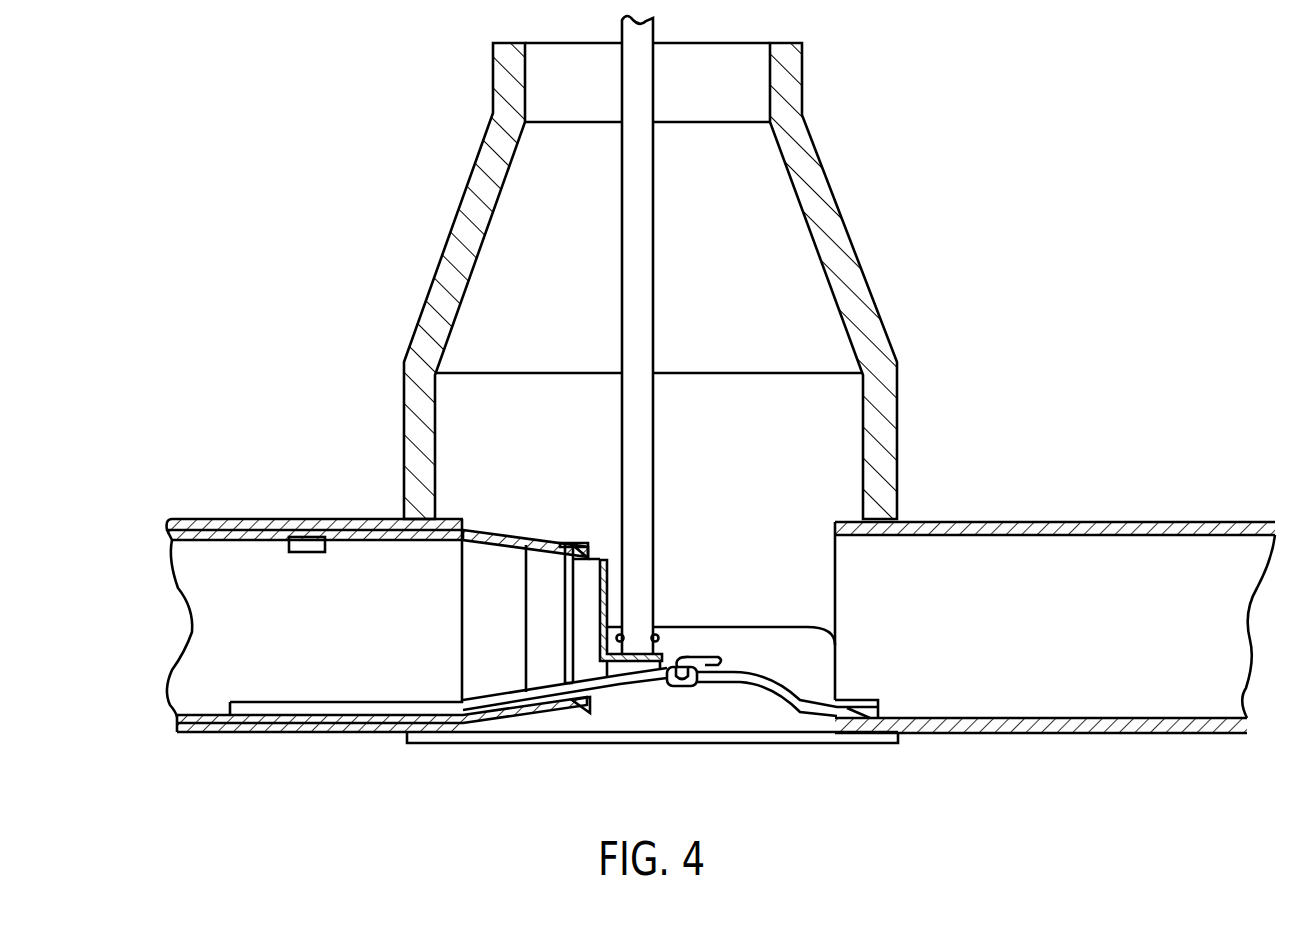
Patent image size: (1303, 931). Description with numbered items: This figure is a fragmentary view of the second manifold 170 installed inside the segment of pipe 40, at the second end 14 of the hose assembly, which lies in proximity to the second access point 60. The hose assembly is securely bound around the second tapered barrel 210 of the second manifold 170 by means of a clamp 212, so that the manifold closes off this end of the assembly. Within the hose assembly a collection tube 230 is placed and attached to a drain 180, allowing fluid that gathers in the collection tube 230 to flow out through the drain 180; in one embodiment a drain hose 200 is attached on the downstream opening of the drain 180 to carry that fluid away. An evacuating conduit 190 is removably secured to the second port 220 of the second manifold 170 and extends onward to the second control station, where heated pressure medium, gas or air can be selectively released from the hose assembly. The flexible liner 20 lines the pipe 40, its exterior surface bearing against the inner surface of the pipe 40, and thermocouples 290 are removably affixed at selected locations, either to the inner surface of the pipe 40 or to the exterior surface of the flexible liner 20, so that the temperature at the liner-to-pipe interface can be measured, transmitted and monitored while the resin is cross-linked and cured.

The second end 14 is at (500, 530).
The flexible liner 20 is at (245, 722).
The segment of pipe 40 is at (180, 722).
The second access point 60 is at (705, 122).
The second manifold 170 is at (483, 643).
The drain 180 is at (697, 683).
The evacuating conduit 190 is at (653, 352).
The drain hose 200 is at (870, 717).
The second tapered barrel 210 is at (563, 642).
The clamp 212 is at (568, 678).
The second port 220 is at (657, 625).
The collection tube 230 is at (293, 708).
The thermocouples 290 is at (287, 518).